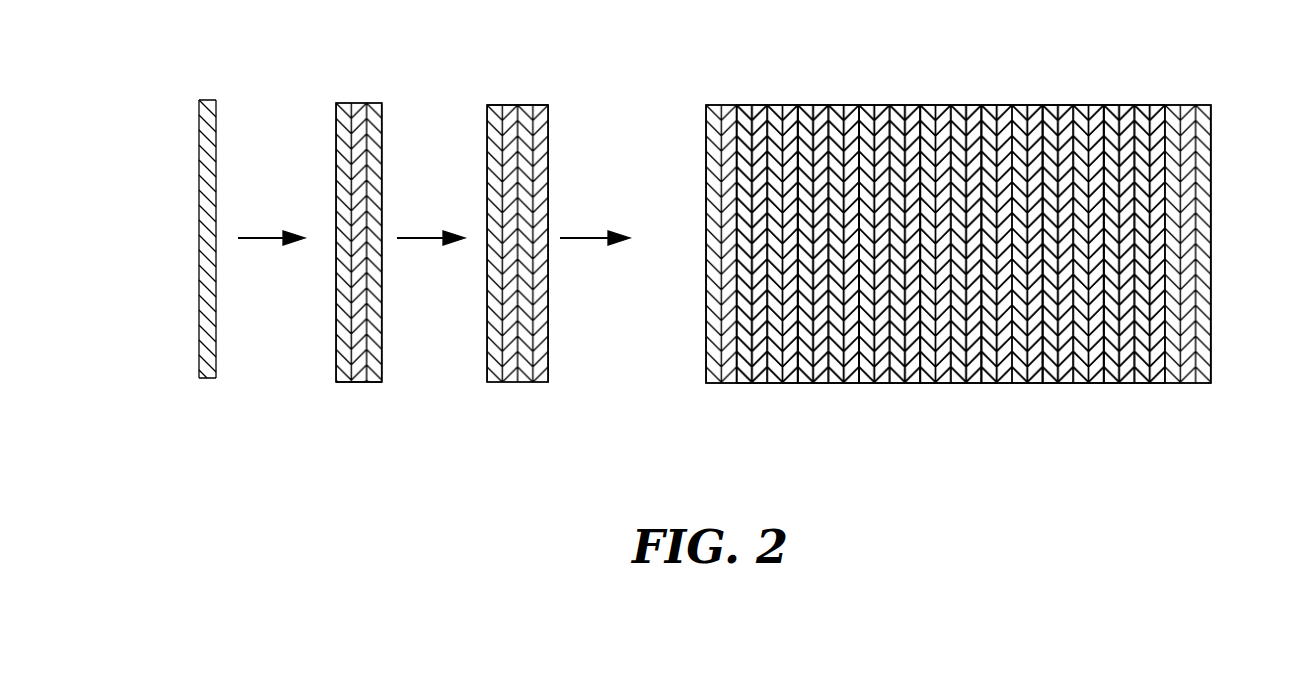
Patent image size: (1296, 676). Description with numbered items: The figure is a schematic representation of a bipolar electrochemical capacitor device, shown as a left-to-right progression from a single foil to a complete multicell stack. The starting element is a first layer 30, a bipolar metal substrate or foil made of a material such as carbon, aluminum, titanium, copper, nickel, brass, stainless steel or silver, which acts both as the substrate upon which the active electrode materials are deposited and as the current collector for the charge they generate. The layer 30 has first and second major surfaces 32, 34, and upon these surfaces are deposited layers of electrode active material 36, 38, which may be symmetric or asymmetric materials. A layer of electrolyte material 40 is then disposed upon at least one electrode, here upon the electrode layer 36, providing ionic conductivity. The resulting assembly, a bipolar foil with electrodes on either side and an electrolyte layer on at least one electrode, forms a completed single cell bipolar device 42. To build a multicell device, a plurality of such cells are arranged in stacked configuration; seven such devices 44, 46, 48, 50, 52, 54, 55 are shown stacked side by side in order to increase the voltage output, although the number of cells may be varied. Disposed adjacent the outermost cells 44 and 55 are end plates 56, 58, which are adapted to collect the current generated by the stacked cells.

The first layer 30 is at (206, 234).
The first major surface 32 is at (197, 362).
The second major surface 34 is at (215, 362).
The layer of electrode active material 36 is at (359, 245).
The layer of electrode active material 38 is at (375, 383).
The electrolyte material 40 is at (495, 105).
The single cell bipolar device 42 is at (520, 193).
The single cell device 44 is at (1104, 105).
The single cell device 46 is at (1043, 105).
The single cell device 48 is at (981, 105).
The single cell device 50 is at (920, 105).
The single cell device 52 is at (859, 105).
The single cell device 54 is at (798, 105).
The single cell device 55 is at (737, 105).
The end plate 56 is at (1218, 110).
The end plate 58 is at (961, 215).